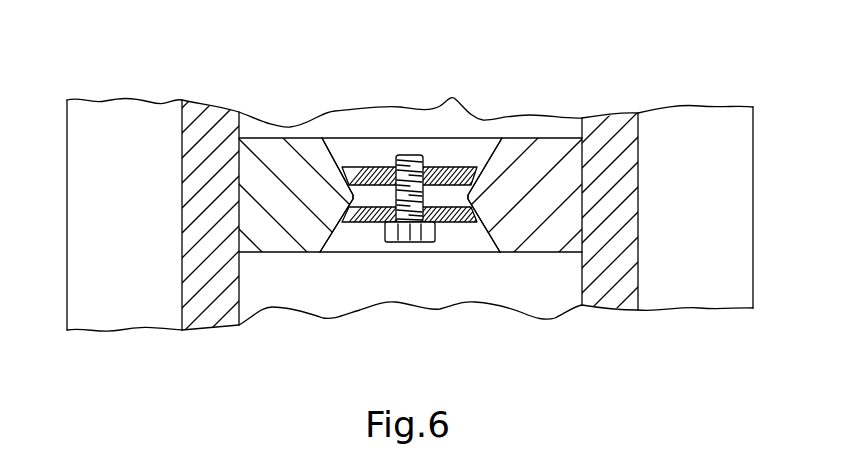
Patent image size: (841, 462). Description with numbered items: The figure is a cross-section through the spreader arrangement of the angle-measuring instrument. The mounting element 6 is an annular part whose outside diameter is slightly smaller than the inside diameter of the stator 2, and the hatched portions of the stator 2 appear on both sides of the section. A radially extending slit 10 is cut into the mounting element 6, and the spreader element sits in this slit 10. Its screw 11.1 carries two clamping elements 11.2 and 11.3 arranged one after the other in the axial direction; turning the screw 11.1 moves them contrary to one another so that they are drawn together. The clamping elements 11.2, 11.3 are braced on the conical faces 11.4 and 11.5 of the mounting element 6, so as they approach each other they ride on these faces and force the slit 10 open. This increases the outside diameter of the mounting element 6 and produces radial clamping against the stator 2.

The stator 2 is at (613, 127).
The mounting element 6 is at (553, 152).
The slit 10 is at (370, 157).
The screw 11.1 is at (392, 242).
The clamping element 11.2 is at (457, 222).
The clamping element 11.3 is at (450, 167).
The conical face 11.4 is at (502, 165).
The conical face 11.5 is at (322, 167).